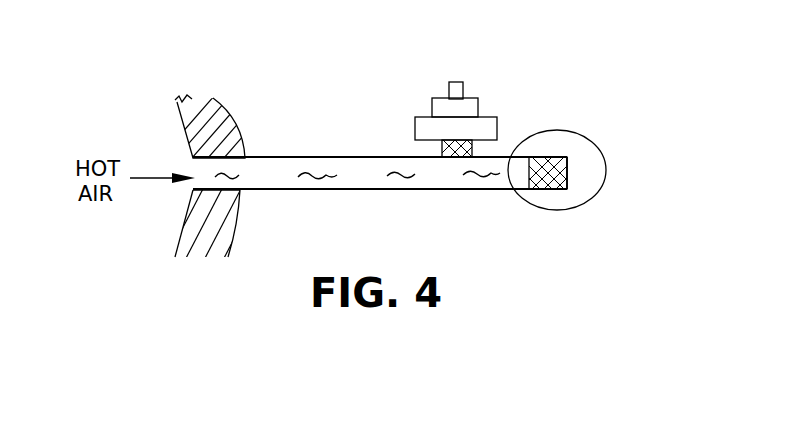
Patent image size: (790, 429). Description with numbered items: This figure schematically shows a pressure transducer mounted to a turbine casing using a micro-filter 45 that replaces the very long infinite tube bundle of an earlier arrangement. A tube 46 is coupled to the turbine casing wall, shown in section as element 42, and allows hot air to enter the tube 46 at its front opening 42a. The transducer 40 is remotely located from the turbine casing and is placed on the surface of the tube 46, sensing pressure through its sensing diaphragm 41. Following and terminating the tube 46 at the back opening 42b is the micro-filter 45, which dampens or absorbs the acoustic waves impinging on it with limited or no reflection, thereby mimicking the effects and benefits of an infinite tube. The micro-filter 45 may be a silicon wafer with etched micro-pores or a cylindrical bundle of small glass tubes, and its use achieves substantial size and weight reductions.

The transducer 40 is at (455, 79).
The sensing diaphragm 41 is at (433, 148).
The wall 42 is at (183, 133).
The front opening 42a is at (188, 190).
The back opening 42b is at (522, 183).
The micro-filter 45 is at (556, 146).
The tube 46 is at (337, 193).